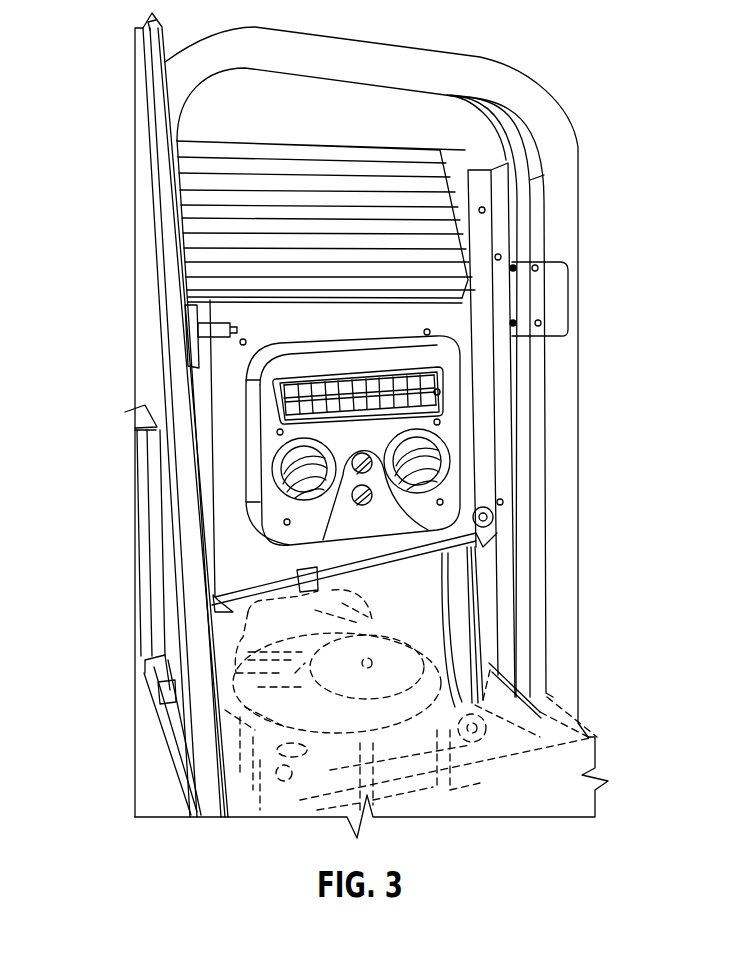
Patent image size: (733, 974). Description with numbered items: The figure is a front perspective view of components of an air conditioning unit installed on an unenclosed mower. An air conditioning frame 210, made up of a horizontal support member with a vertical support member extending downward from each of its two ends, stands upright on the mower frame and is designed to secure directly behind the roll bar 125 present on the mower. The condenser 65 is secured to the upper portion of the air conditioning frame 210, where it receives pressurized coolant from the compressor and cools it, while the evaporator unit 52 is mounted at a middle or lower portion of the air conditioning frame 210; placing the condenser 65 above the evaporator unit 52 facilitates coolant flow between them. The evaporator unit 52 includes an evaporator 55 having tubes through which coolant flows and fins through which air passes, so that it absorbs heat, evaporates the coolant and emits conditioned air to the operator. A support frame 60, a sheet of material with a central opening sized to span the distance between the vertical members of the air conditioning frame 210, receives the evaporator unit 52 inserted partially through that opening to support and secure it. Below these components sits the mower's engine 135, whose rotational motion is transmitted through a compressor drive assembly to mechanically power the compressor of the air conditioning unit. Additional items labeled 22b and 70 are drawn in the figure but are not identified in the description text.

The vertical frame post 22b is at (153, 67).
The roll bar 125 is at (533, 98).
The air conditioning frame 210 is at (477, 112).
The condenser 65 is at (330, 173).
The evaporator unit 52 is at (342, 338).
The evaporator 55 is at (412, 385).
The support frame 60 is at (214, 418).
The cable 70 is at (440, 612).
The engine 135 is at (303, 685).